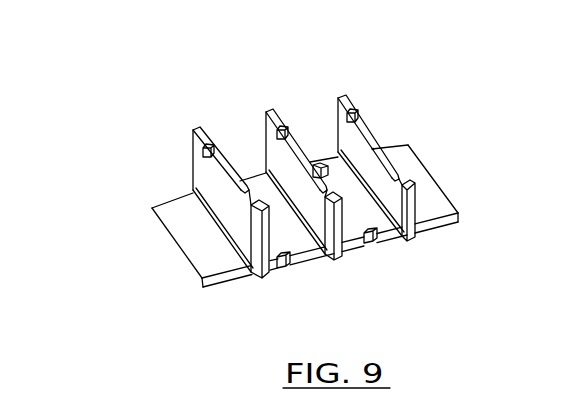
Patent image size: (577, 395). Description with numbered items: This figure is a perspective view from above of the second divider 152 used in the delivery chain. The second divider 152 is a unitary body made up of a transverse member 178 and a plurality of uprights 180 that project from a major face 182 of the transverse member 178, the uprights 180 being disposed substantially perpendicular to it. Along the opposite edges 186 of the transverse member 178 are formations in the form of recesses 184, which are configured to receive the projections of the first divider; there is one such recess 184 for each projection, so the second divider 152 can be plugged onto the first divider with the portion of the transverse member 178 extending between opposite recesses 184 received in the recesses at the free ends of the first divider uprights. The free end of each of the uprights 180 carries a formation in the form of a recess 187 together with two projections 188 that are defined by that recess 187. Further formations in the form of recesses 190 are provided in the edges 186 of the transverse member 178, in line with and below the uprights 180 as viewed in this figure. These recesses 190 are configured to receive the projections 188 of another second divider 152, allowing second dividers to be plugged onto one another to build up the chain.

The second divider 152 is at (441, 108).
The transverse member 178 is at (437, 201).
The uprights 180 is at (193, 170).
The major face 182 is at (202, 255).
The recesses 184 is at (244, 190).
The edges 186 is at (182, 207).
The recess 187 is at (373, 149).
The projections 188 is at (203, 127).
The recesses 190 is at (260, 279).